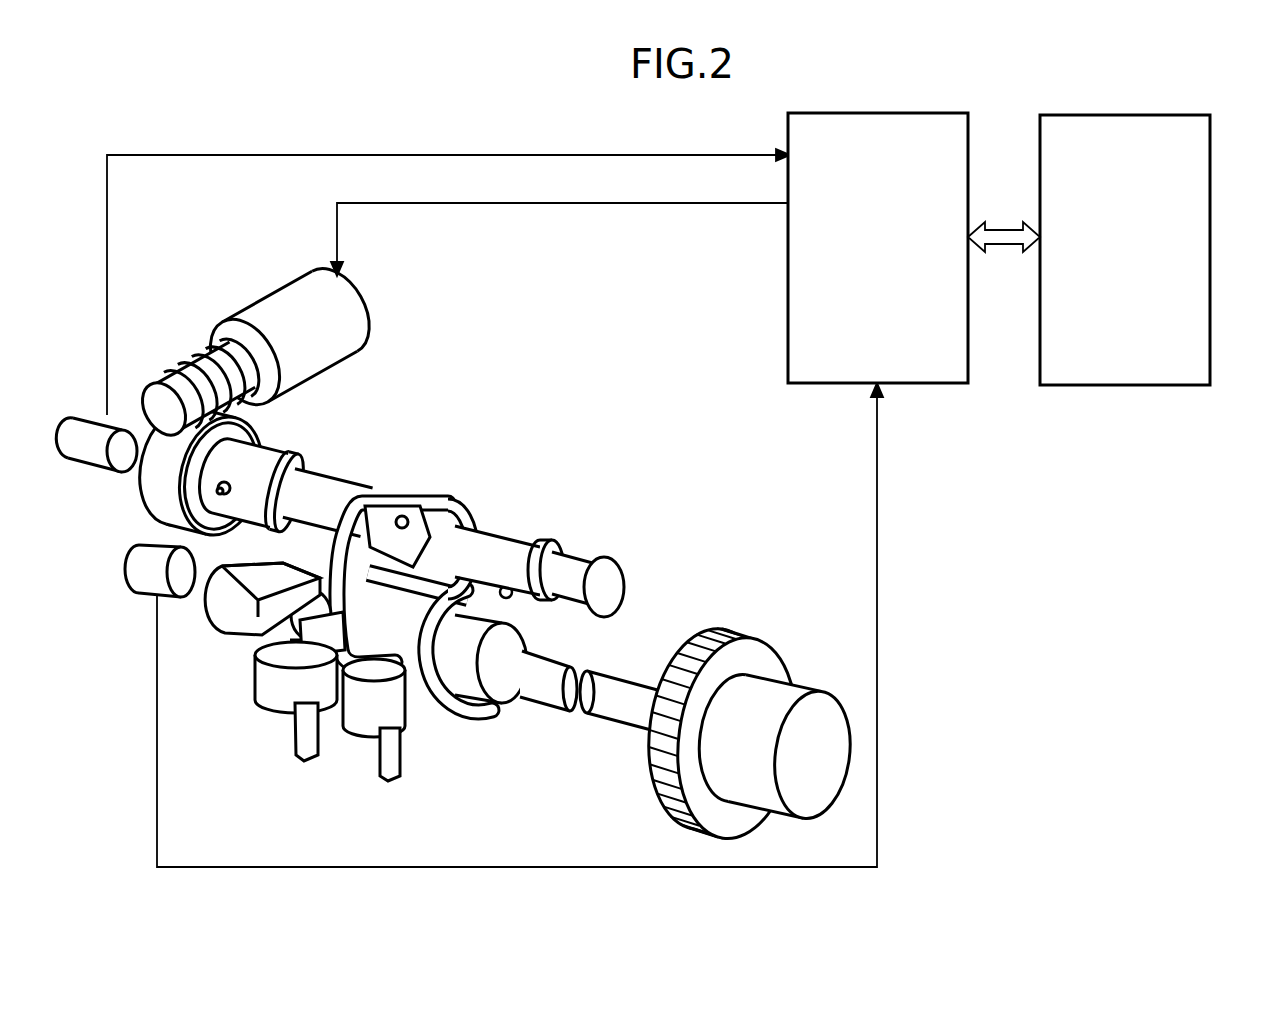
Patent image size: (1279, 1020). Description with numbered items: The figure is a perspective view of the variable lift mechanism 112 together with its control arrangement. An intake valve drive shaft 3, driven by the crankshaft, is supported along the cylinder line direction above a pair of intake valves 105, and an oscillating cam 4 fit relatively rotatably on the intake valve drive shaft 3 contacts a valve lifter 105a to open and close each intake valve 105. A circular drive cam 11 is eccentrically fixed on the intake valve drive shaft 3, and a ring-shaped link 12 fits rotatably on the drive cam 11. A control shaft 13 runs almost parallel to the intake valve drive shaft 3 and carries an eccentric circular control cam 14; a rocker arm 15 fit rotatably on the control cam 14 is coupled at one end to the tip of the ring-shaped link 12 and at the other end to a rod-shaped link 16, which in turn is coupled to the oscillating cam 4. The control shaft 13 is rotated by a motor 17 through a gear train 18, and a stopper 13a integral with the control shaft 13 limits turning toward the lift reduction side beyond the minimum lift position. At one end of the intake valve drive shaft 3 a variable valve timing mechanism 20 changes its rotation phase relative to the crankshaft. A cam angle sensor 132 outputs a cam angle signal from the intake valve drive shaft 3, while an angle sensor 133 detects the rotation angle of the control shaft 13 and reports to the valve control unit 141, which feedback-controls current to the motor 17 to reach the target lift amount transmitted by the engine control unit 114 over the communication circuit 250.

The intake valve drive shaft 3 is at (527, 683).
The oscillating cam 4 is at (233, 627).
The drive cam 11 is at (433, 708).
The ring-shaped link 12 is at (407, 703).
The control shaft 13 is at (545, 540).
The stopper 13a is at (228, 486).
The control cam 14 is at (463, 551).
The rocker arm 15 is at (421, 510).
The rod-shaped link 16 is at (343, 677).
The motor 17 is at (313, 352).
The gear train 18 is at (207, 337).
The variable valve timing mechanism 20 is at (803, 680).
The intake valve 105 is at (300, 743).
The valve lifter 105a is at (263, 687).
The variable lift mechanism 112 is at (486, 484).
The engine control unit 114 is at (1210, 182).
The cam angle sensor 132 is at (137, 577).
The angle sensor 133 is at (97, 468).
The valve control unit 141 is at (788, 253).
The communication circuit 250 is at (1000, 244).